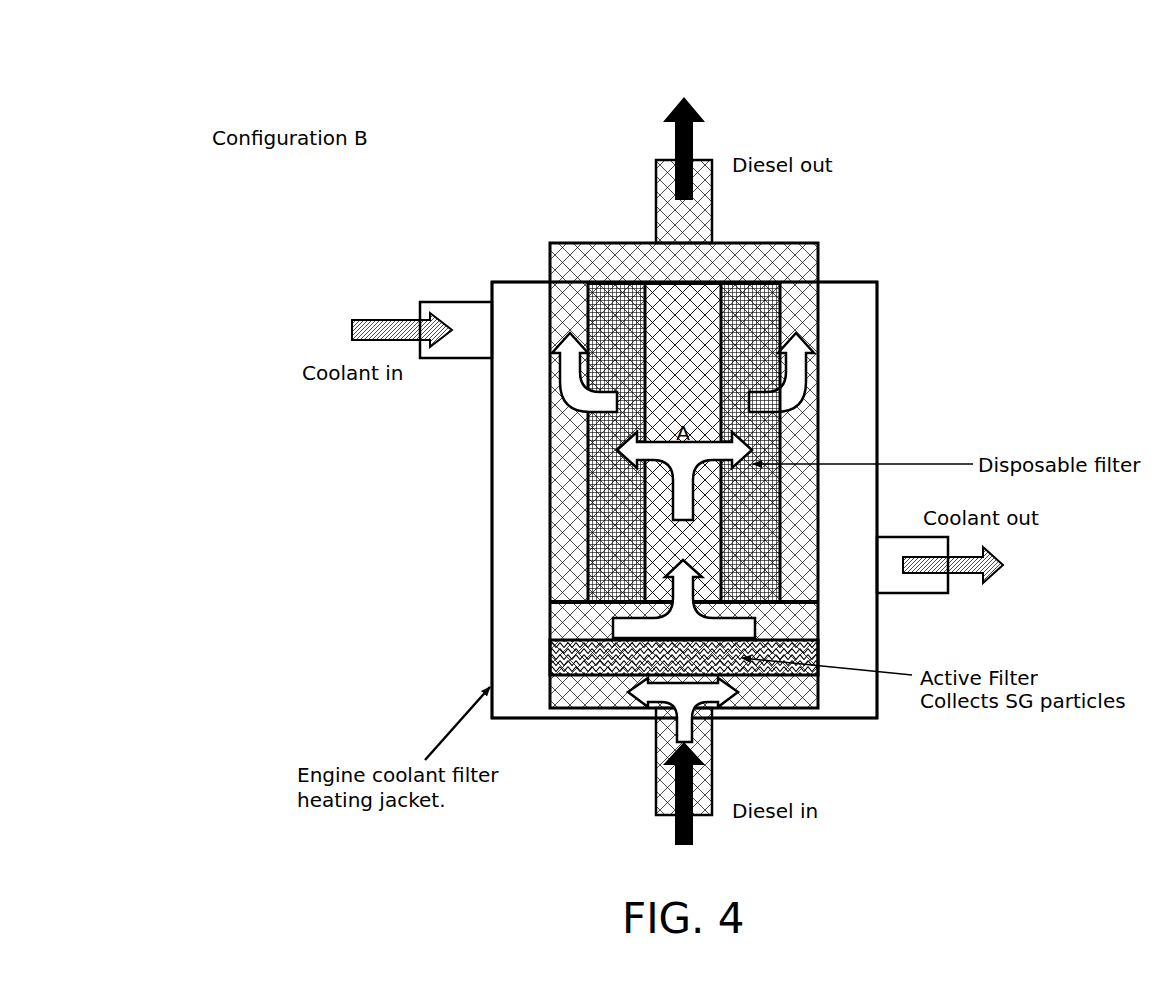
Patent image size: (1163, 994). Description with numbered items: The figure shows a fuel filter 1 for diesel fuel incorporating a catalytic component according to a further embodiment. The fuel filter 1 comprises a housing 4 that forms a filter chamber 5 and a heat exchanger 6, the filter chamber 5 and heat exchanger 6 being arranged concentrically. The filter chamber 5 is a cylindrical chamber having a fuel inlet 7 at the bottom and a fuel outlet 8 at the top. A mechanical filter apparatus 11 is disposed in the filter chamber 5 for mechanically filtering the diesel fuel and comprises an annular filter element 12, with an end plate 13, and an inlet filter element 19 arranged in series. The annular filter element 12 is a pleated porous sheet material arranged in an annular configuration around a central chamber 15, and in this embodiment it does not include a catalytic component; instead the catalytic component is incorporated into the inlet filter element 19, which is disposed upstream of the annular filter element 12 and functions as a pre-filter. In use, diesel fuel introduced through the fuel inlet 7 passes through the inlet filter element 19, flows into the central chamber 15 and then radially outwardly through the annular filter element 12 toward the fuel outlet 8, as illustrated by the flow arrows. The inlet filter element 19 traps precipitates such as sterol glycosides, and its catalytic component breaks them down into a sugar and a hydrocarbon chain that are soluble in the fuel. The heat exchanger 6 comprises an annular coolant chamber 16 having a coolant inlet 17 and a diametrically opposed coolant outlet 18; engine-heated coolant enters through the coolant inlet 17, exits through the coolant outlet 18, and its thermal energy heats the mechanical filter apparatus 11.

The fuel filter 1 is at (247, 78).
The housing 4 is at (817, 243).
The filter chamber 5 is at (807, 317).
The heat exchanger 6 is at (457, 277).
The fuel inlet 7 is at (665, 753).
The fuel outlet 8 is at (662, 195).
The mechanical filter apparatus 11 is at (573, 323).
The annular filter element 12 is at (617, 297).
The end plate 13 is at (665, 282).
The central chamber 15 is at (695, 308).
The coolant chamber 16 is at (855, 378).
The coolant inlet 17 is at (427, 315).
The coolant outlet 18 is at (905, 582).
The inlet filter element 19 is at (605, 665).